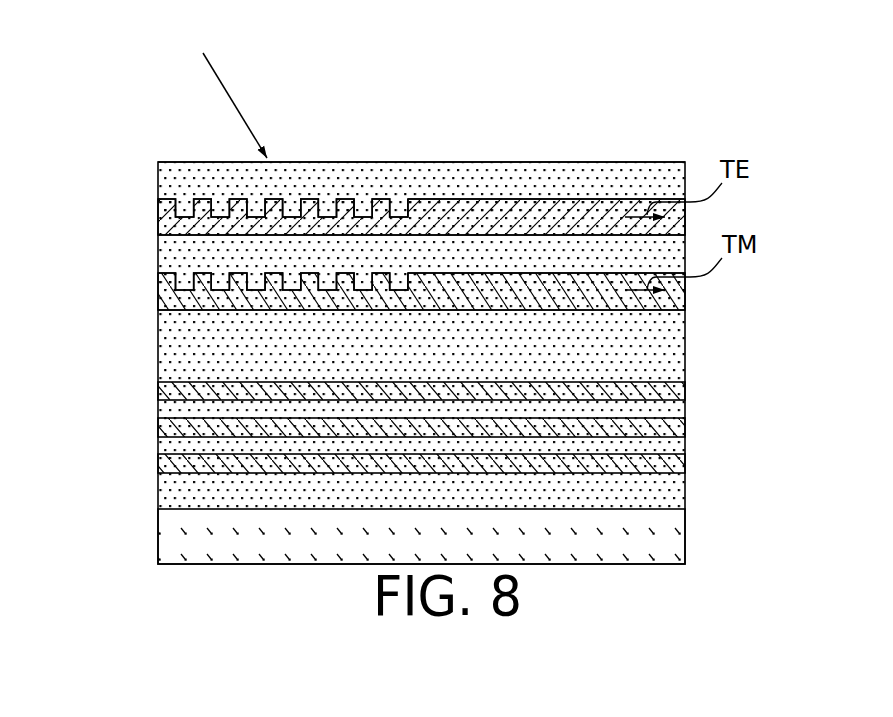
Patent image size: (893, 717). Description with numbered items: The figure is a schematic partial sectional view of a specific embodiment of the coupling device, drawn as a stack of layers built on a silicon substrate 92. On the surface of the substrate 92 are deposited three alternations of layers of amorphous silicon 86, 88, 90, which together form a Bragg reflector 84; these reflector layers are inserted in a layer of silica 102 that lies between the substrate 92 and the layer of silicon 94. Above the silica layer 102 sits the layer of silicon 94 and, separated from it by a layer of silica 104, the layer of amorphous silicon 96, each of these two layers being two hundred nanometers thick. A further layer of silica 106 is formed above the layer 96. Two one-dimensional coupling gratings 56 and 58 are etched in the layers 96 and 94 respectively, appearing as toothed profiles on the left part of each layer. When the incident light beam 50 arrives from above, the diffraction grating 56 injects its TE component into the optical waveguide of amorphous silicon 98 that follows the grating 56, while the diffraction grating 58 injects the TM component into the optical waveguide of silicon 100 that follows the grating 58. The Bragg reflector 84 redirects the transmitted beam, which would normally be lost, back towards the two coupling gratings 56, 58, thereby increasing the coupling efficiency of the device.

The incident light beam 50 is at (236, 106).
The coupling grating 56 is at (324, 195).
The coupling grating 58 is at (366, 266).
The Bragg reflector 84 is at (700, 382).
The layer of amorphous silicon 86 is at (170, 467).
The layer of amorphous silicon 88 is at (170, 429).
The layer of amorphous silicon 90 is at (170, 392).
The silicon substrate 92 is at (170, 533).
The layer of silicon 94 is at (166, 299).
The layer of amorphous silicon 96 is at (170, 224).
The optical waveguide of amorphous silicon 98 is at (645, 194).
The optical waveguide of silicon 100 is at (644, 266).
The layer of silica 102 is at (672, 345).
The layer of silica 104 is at (608, 172).
The layer of silica 106 is at (490, 248).